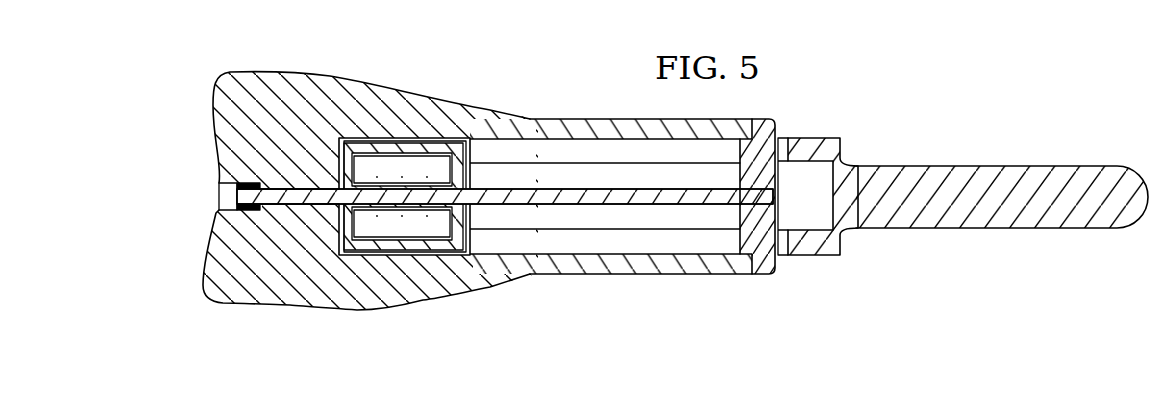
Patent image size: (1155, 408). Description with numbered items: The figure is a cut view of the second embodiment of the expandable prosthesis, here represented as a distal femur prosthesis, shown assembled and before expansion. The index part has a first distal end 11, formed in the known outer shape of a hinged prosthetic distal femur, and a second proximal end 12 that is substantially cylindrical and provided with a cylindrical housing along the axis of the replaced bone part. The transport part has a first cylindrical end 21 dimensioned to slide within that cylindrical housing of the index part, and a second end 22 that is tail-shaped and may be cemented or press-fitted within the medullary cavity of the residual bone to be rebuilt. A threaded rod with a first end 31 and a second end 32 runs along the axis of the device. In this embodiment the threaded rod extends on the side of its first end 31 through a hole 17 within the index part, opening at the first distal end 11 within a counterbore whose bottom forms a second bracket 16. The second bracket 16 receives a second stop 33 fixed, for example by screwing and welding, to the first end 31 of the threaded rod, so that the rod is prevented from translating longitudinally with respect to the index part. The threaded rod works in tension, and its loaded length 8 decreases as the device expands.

The loaded length 8 is at (627, 195).
The first distal end 11 is at (223, 253).
The second proximal end 12 is at (728, 264).
The second bracket 16 is at (255, 208).
The hole 17 is at (297, 183).
The first cylindrical end 21 is at (355, 140).
The second end 22 is at (1120, 187).
The first end 31 is at (260, 197).
The second end 32 is at (757, 195).
The second stop 33 is at (219, 183).